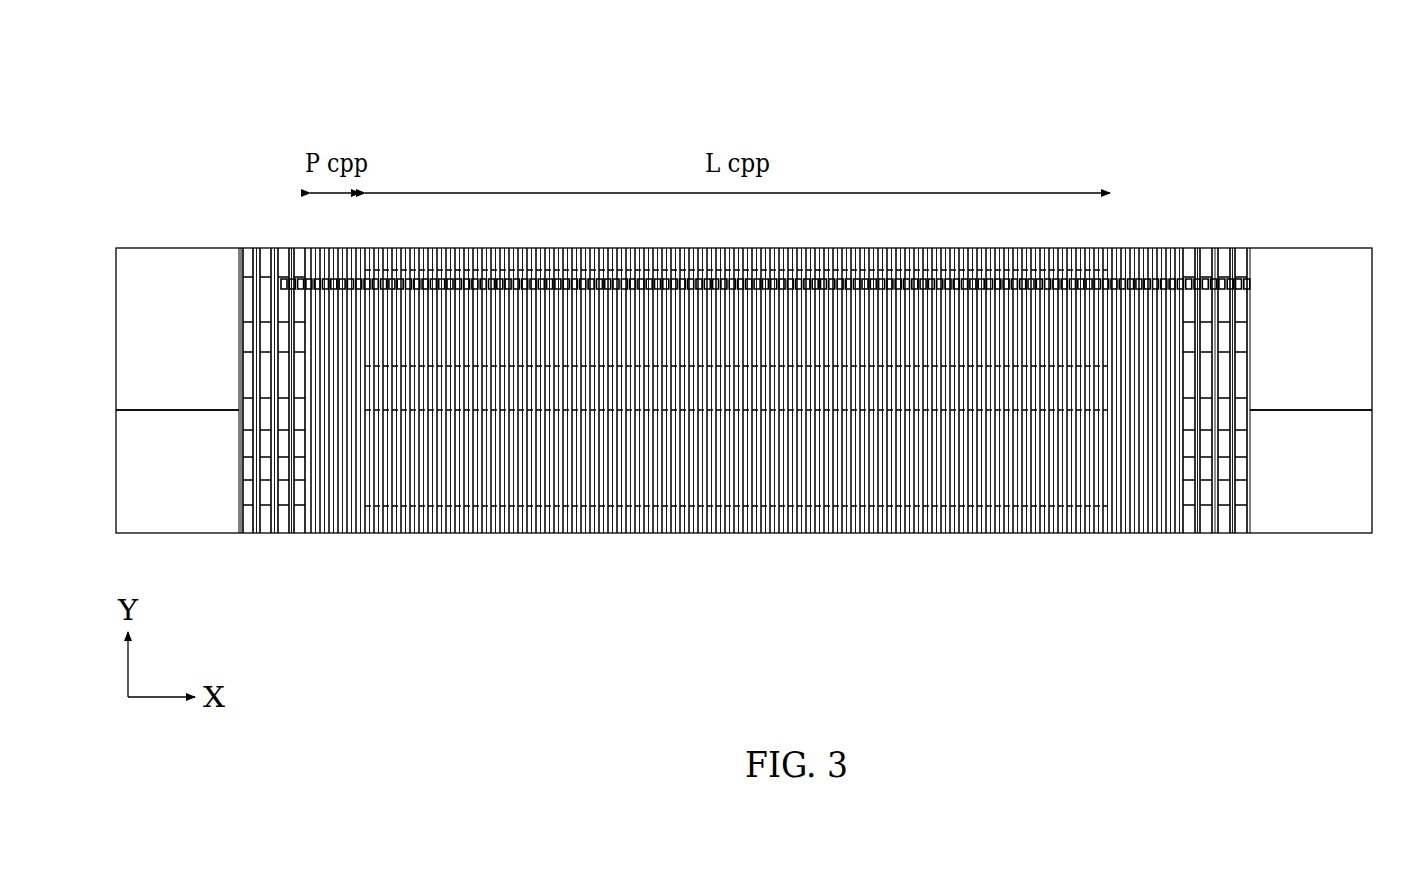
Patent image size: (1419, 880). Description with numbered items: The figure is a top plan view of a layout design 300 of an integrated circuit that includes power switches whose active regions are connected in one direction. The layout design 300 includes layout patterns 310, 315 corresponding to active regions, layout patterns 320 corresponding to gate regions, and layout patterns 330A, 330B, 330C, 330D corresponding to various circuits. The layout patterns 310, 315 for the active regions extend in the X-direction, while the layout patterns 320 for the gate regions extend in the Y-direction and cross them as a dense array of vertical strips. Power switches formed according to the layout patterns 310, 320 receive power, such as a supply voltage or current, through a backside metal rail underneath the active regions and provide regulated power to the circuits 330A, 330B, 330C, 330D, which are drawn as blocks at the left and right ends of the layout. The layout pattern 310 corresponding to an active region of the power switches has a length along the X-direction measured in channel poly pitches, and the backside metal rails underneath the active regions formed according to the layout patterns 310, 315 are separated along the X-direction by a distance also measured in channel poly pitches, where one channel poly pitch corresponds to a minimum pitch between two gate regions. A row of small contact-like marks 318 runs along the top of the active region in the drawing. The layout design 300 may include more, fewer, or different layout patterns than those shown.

The layout design 300 is at (186, 93).
The layout pattern corresponding to active region 310 is at (660, 345).
The layout pattern corresponding to active region 315 is at (265, 290).
The contact row 318 is at (1140, 282).
The layout patterns corresponding to gate regions 320 is at (447, 533).
The layout pattern corresponding to circuit 330A is at (207, 359).
The layout pattern corresponding to circuit 330B is at (207, 501).
The layout pattern corresponding to circuit 330C is at (1342, 359).
The layout pattern corresponding to circuit 330D is at (1342, 501).